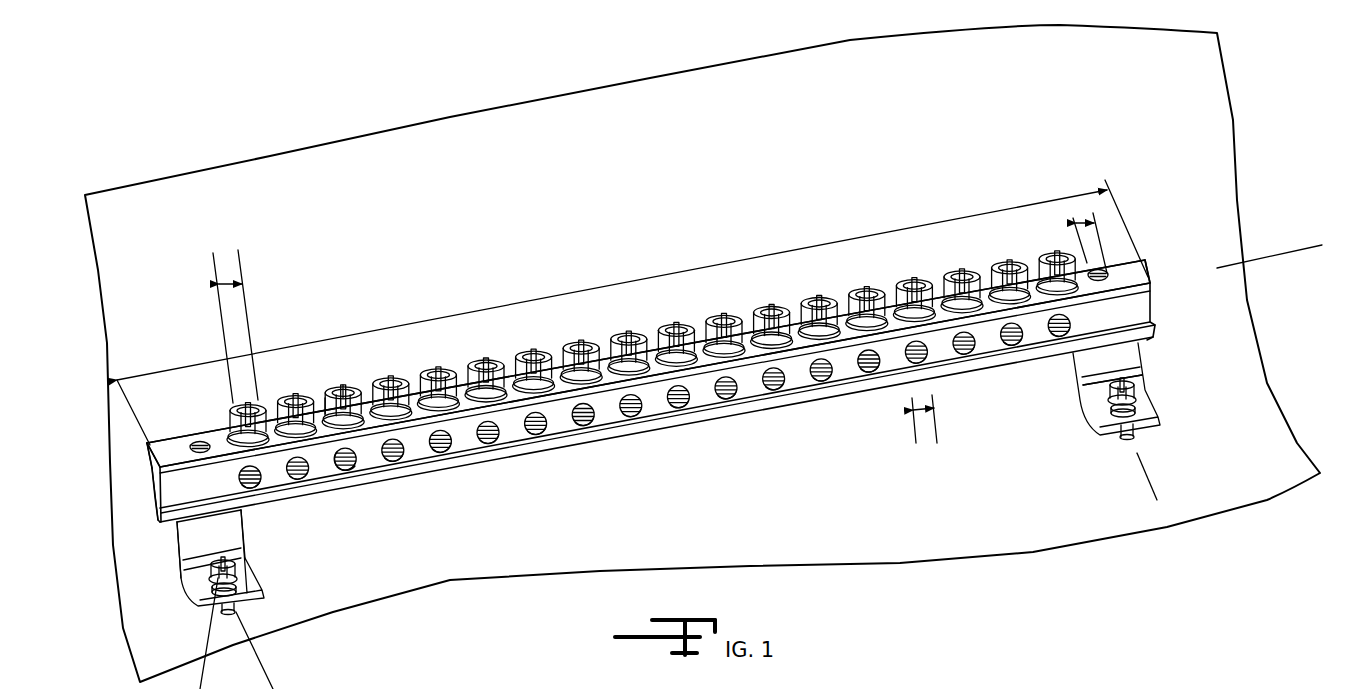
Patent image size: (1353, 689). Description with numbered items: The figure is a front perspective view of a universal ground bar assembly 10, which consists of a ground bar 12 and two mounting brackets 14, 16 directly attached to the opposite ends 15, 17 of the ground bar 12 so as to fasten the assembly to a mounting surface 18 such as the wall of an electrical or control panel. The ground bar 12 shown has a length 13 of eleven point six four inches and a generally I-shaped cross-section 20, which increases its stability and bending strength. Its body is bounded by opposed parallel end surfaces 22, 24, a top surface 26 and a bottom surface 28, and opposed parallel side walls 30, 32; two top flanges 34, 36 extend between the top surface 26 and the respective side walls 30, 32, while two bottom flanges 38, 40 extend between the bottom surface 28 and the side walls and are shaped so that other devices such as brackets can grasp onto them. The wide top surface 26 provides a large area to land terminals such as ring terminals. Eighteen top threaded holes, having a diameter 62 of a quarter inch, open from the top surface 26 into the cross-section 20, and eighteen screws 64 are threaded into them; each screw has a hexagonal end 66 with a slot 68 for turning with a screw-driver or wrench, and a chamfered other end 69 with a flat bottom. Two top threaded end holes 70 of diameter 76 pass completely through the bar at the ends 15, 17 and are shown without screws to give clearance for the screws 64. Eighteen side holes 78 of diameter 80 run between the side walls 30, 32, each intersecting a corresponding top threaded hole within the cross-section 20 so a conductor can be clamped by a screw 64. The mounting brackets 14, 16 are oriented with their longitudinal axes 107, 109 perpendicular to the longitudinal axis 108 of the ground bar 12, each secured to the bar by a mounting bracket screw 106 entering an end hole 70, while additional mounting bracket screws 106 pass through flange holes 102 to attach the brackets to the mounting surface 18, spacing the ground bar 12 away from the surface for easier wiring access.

The universal ground bar assembly 10 is at (633, 256).
The ground bar 12 is at (170, 443).
The length 13 is at (517, 300).
The mounting bracket 14 is at (193, 600).
The end 15 is at (182, 530).
The mounting bracket 16 is at (1085, 426).
The end 17 is at (1117, 338).
The mounting surface 18 is at (905, 33).
The I-shaped cross-section 20 is at (153, 478).
The end surface 22 is at (150, 465).
The end surface 24 is at (1152, 300).
The top surface 26 is at (158, 448).
The bottom surface 28 is at (292, 505).
The side wall 30 is at (151, 472).
The side wall 32 is at (155, 522).
The top flange 34 is at (150, 445).
The top flange 36 is at (241, 518).
The bottom flange 38 is at (147, 492).
The bottom flange 40 is at (175, 525).
The diameter 62 is at (230, 283).
The screws 64 is at (344, 388).
The hexagonal ends 66 is at (355, 366).
The slots 68 is at (341, 368).
The other ends 69 is at (352, 472).
The top threaded end holes 70 is at (198, 439).
The diameter 76 is at (1082, 220).
The side holes 78 is at (346, 470).
The diameter 80 is at (919, 412).
The flange hole 102 is at (240, 585).
The mounting bracket screw 106 is at (1140, 385).
The longitudinal axis 107 is at (275, 688).
The longitudinal axis 108 is at (1273, 257).
The longitudinal axis 109 is at (1150, 478).